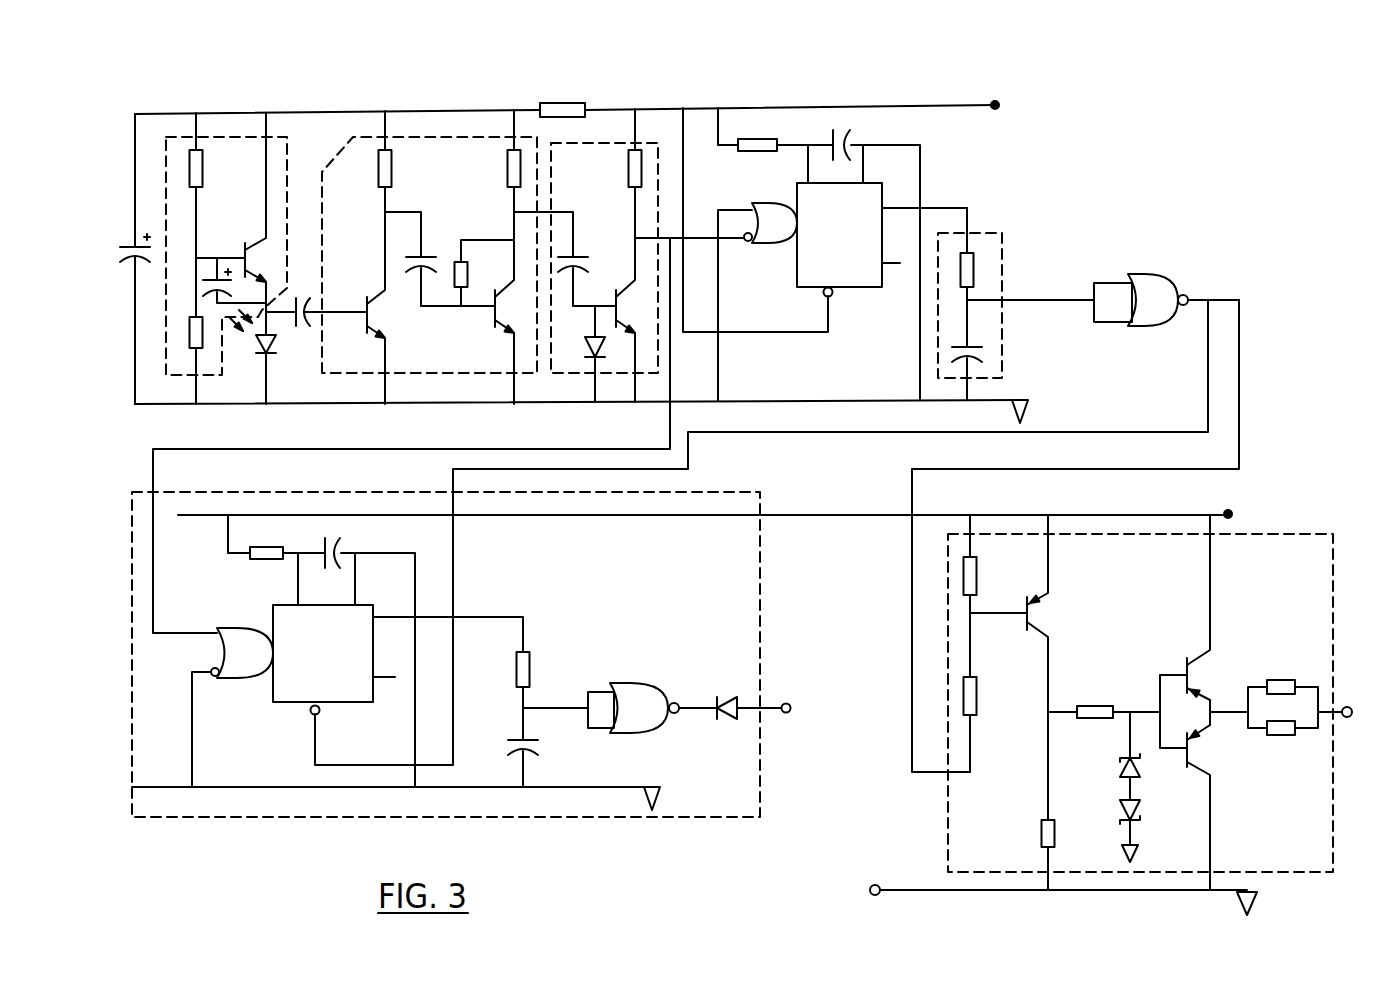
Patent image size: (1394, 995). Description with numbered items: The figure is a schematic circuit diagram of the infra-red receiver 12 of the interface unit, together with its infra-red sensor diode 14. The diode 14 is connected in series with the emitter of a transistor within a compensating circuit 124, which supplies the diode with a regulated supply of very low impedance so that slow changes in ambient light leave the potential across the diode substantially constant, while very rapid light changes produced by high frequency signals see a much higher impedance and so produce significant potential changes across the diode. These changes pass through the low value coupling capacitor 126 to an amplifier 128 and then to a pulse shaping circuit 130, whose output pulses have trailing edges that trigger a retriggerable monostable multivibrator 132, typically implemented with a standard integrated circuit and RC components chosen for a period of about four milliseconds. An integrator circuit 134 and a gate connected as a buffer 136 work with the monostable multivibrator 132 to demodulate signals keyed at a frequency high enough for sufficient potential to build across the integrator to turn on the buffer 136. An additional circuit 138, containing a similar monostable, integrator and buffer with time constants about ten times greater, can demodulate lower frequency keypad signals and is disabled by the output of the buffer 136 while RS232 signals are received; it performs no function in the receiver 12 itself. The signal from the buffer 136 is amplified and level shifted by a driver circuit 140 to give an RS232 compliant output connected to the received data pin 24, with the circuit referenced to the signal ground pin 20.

The infra-red receiver 12 is at (1128, 141).
The infra-red sensor diode 14 is at (262, 348).
The signal ground pin 20 is at (878, 885).
The received data pin 24 is at (1347, 706).
The ambient light compensating circuit 124 is at (289, 162).
The coupling capacitor 126 is at (301, 326).
The amplifier 128 is at (538, 140).
The pulse shaping circuit 130 is at (658, 178).
The retriggerable monostable multivibrator 132 is at (862, 287).
The integrator circuit 134 is at (1003, 258).
The buffer 136 is at (1150, 324).
The additional demodulating circuit 138 is at (760, 565).
The driver circuit 140 is at (1268, 534).